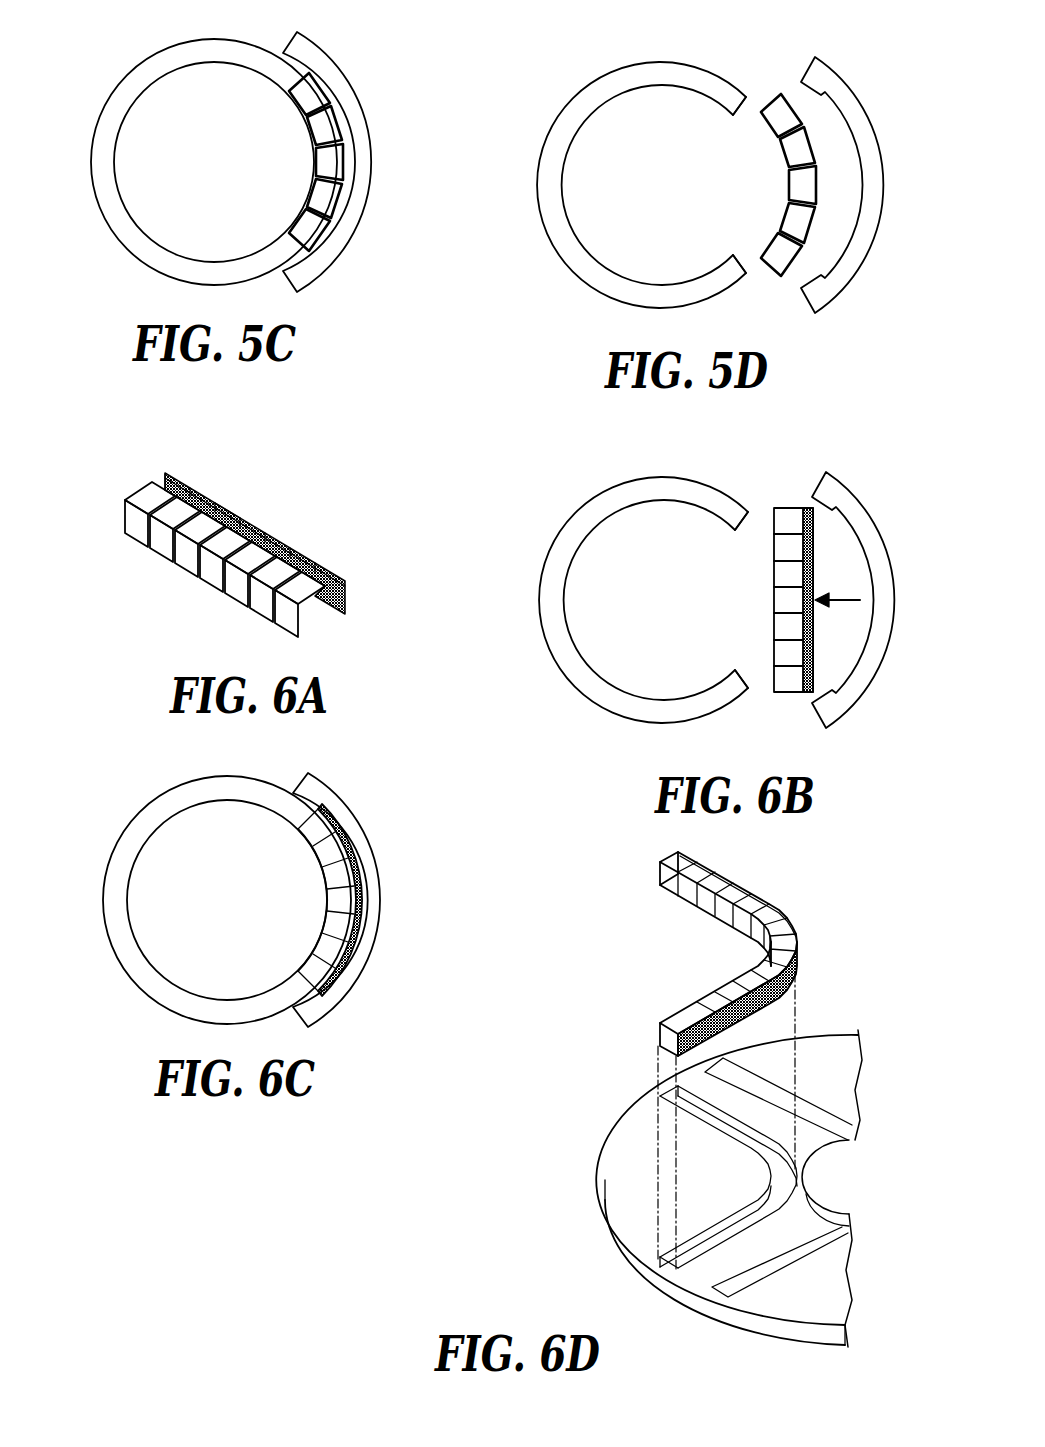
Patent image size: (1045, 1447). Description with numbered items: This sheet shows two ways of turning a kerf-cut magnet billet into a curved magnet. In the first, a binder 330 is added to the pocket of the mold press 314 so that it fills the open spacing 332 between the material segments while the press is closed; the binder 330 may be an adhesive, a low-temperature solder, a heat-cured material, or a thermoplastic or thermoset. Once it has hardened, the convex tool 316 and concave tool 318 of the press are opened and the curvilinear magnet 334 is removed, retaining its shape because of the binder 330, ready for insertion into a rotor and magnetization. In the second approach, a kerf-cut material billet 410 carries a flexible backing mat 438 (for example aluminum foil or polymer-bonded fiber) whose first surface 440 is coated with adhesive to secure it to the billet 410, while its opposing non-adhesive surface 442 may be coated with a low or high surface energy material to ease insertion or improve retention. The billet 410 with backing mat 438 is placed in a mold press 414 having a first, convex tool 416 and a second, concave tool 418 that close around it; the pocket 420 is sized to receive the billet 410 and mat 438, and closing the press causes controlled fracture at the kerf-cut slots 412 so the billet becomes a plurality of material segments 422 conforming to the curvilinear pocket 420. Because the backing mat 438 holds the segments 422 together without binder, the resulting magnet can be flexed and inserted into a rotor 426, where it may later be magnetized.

In FIG. 5C, the mold press 314 is at (120, 55).
In FIG. 5D, the mold press 314 is at (601, 55).
In FIG. 5C, the binder 330 is at (338, 95).
In FIG. 5C, the open spacing 332 is at (323, 187).
In FIG. 5D, the first, convex tool 316 is at (747, 118).
In FIG. 5D, the second, concave tool 318 is at (860, 103).
In FIG. 5D, the curvilinear magnet 334 is at (808, 233).
In FIG. 6A, the first surface 440 is at (172, 473).
In FIG. 6A, the non-adhesive surface 442 is at (233, 493).
In FIG. 6A, the kerf-cut material billet 410 is at (263, 527).
In FIG. 6B, the kerf-cut material billet 410 is at (828, 621).
In FIG. 6D, the kerf-cut material billet 410 is at (743, 963).
In FIG. 6A, the kerf-cut slots 412 is at (250, 587).
In FIG. 6A, the backing mat 438 is at (347, 588).
In FIG. 6B, the backing mat 438 is at (808, 563).
In FIG. 6D, the backing mat 438 is at (798, 985).
In FIG. 6B, the mold press 414 is at (589, 488).
In FIG. 6C, the mold press 414 is at (134, 797).
In FIG. 6B, the first, convex tool 416 is at (750, 540).
In FIG. 6B, the second, concave tool 418 is at (857, 502).
In FIG. 6C, the material segments 422 is at (343, 945).
In FIG. 6C, the pocket 420 is at (337, 960).
In FIG. 6D, the rotor 426 is at (622, 1243).